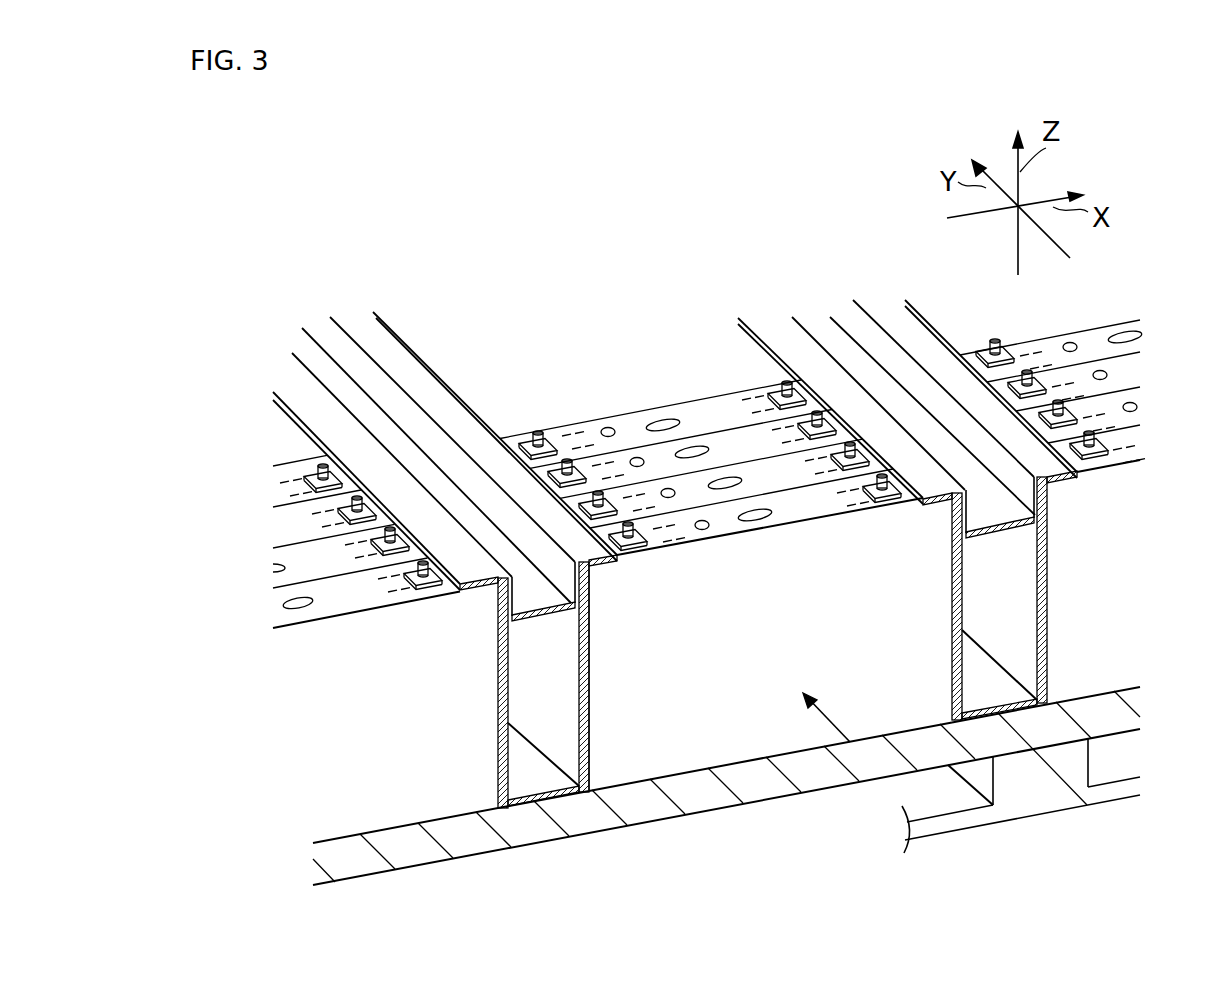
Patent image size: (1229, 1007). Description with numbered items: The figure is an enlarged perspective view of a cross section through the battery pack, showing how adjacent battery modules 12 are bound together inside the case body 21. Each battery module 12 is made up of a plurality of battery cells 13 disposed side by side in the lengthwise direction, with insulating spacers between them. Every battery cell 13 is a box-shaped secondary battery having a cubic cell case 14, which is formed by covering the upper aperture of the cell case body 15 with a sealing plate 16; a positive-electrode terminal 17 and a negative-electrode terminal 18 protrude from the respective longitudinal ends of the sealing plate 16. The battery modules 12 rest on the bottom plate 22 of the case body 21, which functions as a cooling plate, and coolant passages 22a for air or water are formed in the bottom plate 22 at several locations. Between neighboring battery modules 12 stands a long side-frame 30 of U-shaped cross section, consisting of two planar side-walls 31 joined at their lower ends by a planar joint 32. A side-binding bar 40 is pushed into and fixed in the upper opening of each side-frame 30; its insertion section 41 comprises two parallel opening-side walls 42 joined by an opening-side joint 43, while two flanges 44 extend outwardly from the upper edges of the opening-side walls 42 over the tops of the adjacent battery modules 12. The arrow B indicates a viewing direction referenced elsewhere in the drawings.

The battery module 12 is at (700, 390).
The battery cell 13 is at (770, 555).
The cell case 14 is at (835, 572).
The cell case body 15 is at (712, 578).
The sealing plate 16 is at (790, 510).
The positive-electrode terminal 17 is at (637, 550).
The negative-electrode terminal 18 is at (884, 505).
The case body 21 is at (751, 810).
The bottom plate 22 is at (808, 780).
The coolant passage 22a is at (933, 805).
The side-frame 30 is at (776, 690).
The side-wall 31 is at (571, 640).
The joint 32 is at (538, 780).
The side-binding bar 40 is at (675, 474).
The insertion section 41 is at (540, 597).
The opening-side wall 42 is at (460, 460).
The opening-side joint 43 is at (431, 468).
The flange 44 is at (306, 392).
The viewing direction B is at (836, 708).